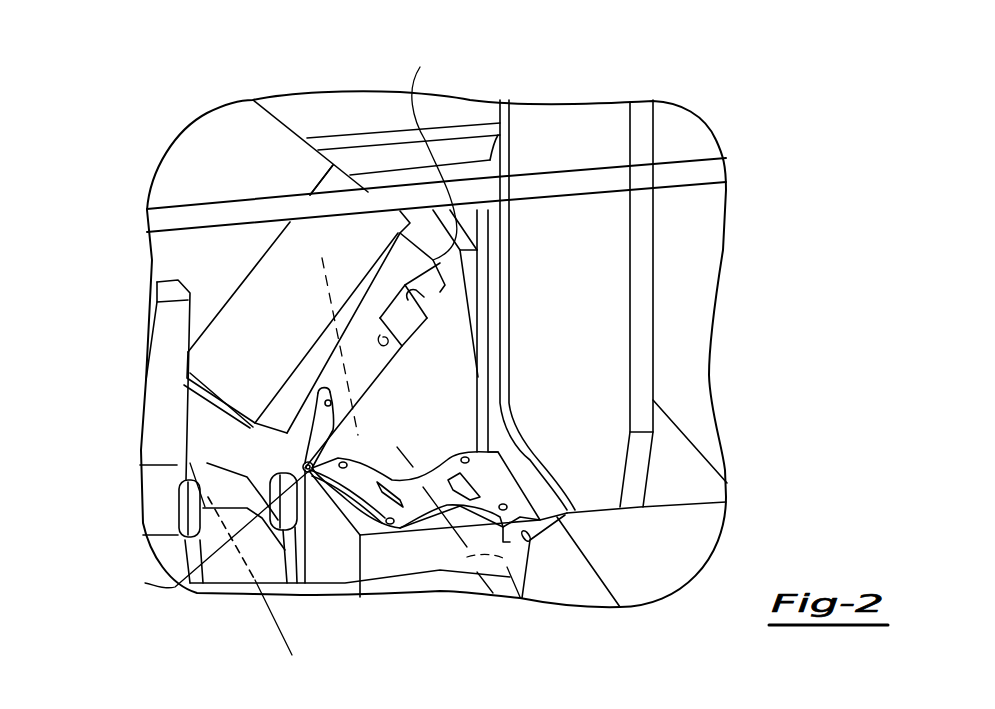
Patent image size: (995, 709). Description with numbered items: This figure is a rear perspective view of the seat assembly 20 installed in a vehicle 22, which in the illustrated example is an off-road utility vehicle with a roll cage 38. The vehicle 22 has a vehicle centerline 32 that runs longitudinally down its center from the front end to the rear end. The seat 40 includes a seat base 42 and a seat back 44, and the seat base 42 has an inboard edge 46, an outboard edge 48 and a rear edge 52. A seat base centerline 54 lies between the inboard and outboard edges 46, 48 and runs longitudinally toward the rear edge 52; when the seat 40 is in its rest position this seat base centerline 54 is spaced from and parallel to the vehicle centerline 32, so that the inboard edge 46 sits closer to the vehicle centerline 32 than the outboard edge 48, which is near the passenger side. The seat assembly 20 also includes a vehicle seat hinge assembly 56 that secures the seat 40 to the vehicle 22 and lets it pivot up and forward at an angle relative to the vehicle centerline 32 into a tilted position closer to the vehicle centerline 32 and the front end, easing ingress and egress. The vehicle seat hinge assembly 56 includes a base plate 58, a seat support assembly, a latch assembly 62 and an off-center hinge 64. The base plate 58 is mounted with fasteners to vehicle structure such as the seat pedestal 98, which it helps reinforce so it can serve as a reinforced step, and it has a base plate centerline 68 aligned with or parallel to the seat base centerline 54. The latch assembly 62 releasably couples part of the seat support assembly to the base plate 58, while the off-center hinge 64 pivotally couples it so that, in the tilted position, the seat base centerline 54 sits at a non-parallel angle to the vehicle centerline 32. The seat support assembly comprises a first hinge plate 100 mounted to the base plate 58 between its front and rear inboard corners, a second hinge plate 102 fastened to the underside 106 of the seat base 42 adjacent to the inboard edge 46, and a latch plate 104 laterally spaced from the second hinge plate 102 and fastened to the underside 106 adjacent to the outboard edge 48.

The seat assembly 20 is at (338, 543).
The vehicle 22 is at (752, 118).
The vehicle centerline 32 is at (270, 618).
The roll cage 38 is at (657, 180).
The seat 40 is at (293, 130).
The seat base 42 is at (277, 430).
The seat back 44 is at (196, 177).
The inboard edge 46 is at (262, 440).
The outboard edge 48 is at (433, 153).
The rear edge 52 is at (303, 377).
The seat base centerline 54 is at (323, 275).
The vehicle seat hinge assembly 56 is at (449, 374).
The base plate 58 is at (497, 490).
The latch assembly 62 is at (426, 317).
The off-center hinge 64 is at (368, 444).
The base plate centerline 68 is at (520, 598).
The seat pedestal 98 is at (387, 560).
The first hinge plate 100 is at (208, 536).
The second hinge plate 102 is at (307, 468).
The latch plate 104 is at (383, 343).
The underside 106 is at (370, 379).